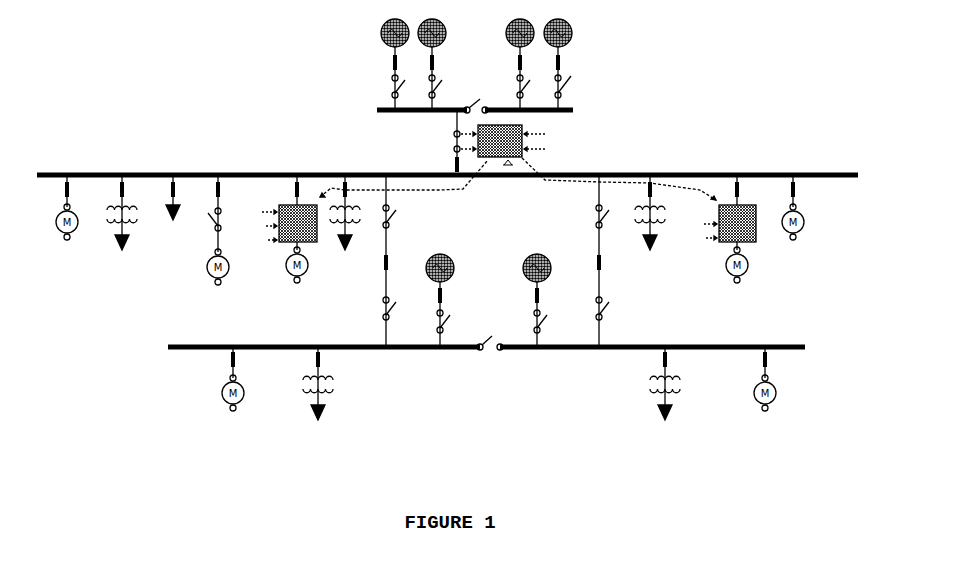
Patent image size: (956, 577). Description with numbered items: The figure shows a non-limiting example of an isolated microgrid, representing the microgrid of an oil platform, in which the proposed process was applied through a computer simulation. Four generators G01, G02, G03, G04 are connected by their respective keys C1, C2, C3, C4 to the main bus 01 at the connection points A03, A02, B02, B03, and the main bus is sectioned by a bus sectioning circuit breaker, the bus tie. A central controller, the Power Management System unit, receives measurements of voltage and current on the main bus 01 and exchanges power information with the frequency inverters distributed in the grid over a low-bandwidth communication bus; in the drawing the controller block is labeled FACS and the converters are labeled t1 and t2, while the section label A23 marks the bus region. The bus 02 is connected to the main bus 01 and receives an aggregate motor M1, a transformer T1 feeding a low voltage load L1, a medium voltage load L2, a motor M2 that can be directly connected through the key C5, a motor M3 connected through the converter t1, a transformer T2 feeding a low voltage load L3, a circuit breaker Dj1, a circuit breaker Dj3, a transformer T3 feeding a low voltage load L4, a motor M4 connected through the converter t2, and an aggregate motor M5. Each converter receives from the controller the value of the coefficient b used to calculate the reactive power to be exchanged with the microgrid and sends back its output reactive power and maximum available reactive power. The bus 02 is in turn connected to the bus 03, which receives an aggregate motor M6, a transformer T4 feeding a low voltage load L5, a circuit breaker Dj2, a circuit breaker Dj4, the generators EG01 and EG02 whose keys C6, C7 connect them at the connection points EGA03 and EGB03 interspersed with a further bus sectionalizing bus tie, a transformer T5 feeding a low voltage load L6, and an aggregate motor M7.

The main bus 01 is at (576, 108).
The bus 02 is at (844, 172).
The bus 03 is at (806, 345).
The generator G01 is at (395, 57).
The generator G02 is at (432, 57).
The generator G03 is at (520, 57).
The generator G04 is at (558, 57).
The key C1 is at (388, 86).
The key C2 is at (425, 86).
The key C3 is at (513, 86).
The key C4 is at (553, 86).
The key C5 is at (204, 214).
The key C6 is at (435, 321).
The key C7 is at (532, 321).
The connection point A03 is at (395, 122).
The connection point A02 is at (432, 122).
The connection point B02 is at (519, 122).
The connection point B03 is at (557, 122).
The busbar section A23 is at (136, 186).
The control unit FACS is at (518, 156).
The aggregate motor M1 is at (67, 221).
The motor M2 is at (218, 276).
The motor M3 is at (297, 276).
The motor M4 is at (737, 274).
The aggregate motor M5 is at (793, 221).
The aggregate motor M6 is at (233, 390).
The aggregate motor M7 is at (765, 390).
The transformer T1 is at (131, 206).
The transformer T2 is at (354, 206).
The transformer T3 is at (643, 206).
The transformer T4 is at (329, 377).
The transformer T5 is at (653, 377).
The low voltage load L1 is at (122, 251).
The medium voltage load L2 is at (173, 209).
The low voltage load L3 is at (345, 251).
The low voltage load L4 is at (650, 251).
The low voltage load L5 is at (318, 422).
The low voltage load L6 is at (665, 422).
The circuit breaker Dj1 is at (396, 238).
The circuit breaker Dj2 is at (396, 321).
The circuit breaker Dj3 is at (592, 238).
The circuit breaker Dj4 is at (592, 321).
The generator EG01 is at (440, 293).
The generator EG02 is at (537, 293).
The connection point EGA03 is at (439, 359).
The connection point EGB03 is at (537, 359).
The variable speed drive t1 is at (272, 217).
The variable speed drive t2 is at (729, 217).